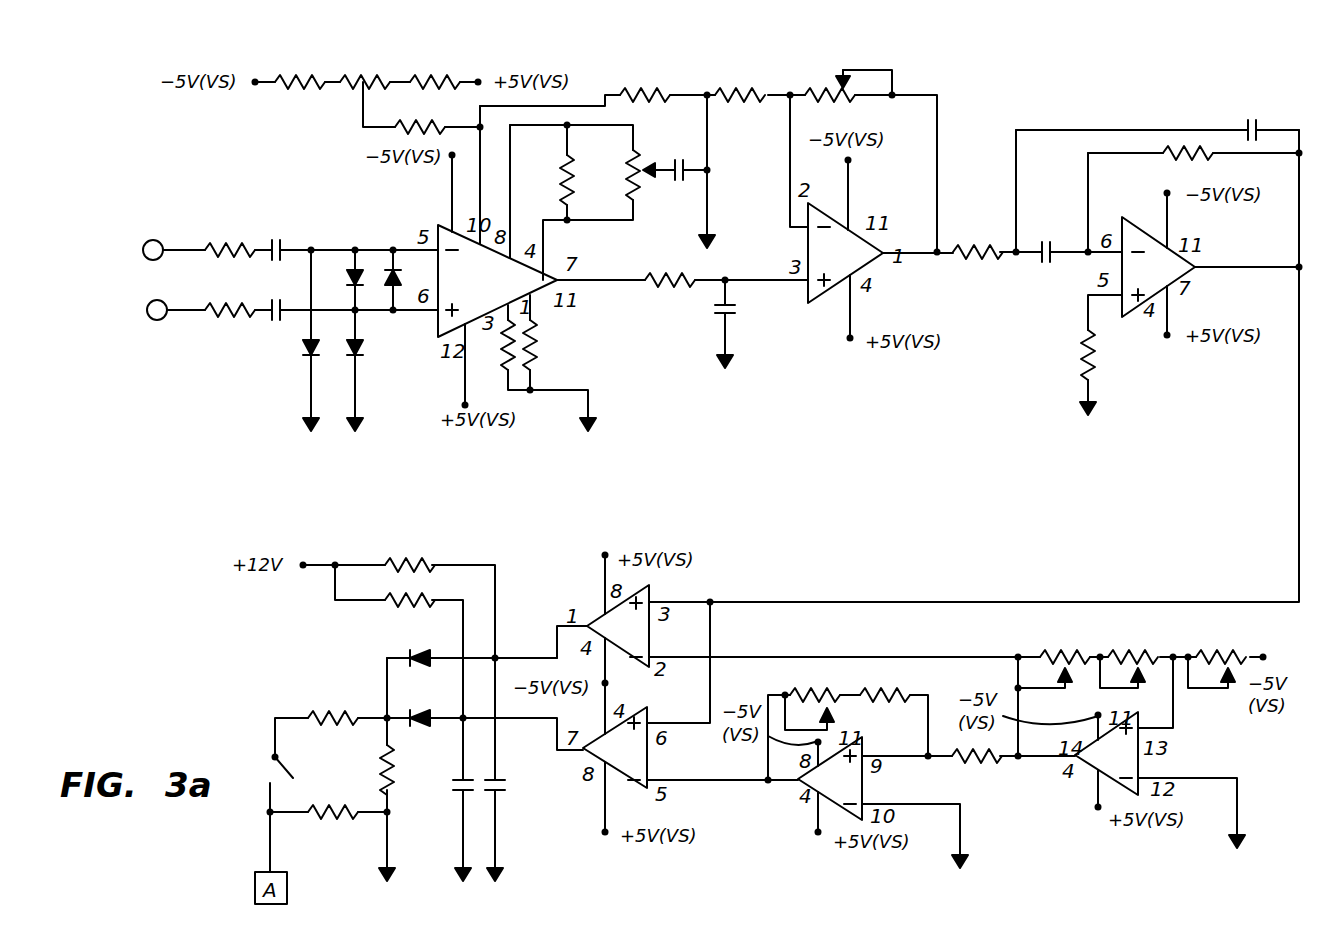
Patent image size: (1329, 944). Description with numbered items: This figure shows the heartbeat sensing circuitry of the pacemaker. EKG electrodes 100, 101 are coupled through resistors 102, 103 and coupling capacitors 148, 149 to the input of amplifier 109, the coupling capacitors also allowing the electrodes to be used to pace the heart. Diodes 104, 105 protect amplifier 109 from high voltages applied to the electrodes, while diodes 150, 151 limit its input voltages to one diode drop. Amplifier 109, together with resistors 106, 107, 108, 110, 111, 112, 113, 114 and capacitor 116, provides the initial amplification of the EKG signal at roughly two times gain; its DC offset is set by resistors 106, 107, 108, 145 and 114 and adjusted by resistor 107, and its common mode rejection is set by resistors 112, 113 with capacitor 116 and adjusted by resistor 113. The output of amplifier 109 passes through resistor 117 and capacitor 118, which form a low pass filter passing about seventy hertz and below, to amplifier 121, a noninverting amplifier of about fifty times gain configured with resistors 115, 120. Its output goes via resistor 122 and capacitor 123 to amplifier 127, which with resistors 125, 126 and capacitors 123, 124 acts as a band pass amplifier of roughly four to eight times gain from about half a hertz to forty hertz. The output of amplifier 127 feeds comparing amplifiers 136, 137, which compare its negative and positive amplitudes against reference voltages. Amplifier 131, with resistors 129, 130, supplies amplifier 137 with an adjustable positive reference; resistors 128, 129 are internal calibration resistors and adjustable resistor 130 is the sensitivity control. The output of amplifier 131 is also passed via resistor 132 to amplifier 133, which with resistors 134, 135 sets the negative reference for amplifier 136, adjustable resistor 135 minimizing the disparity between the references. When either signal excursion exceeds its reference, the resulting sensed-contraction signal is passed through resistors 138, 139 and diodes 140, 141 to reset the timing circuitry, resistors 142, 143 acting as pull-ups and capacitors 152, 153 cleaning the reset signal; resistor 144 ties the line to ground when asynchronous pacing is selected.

The EKG electrode 100 is at (157, 320).
The EKG electrode 101 is at (153, 240).
The resistor 102 is at (218, 242).
The resistor 103 is at (231, 322).
The diode 104 is at (353, 268).
The diode 105 is at (387, 268).
The resistor 106 is at (297, 65).
The resistor 107 is at (366, 65).
The resistor 108 is at (437, 63).
The amplifier 109 is at (437, 325).
The resistor 110 is at (542, 350).
The resistor 111 is at (536, 380).
The resistor 112 is at (572, 190).
The resistor 113 is at (645, 159).
The resistor 114 is at (645, 85).
The resistor 115 is at (755, 83).
The capacitor 116 is at (681, 174).
The resistor 117 is at (670, 289).
The capacitor 118 is at (738, 315).
The resistor 120 is at (865, 69).
The amplifier 121 is at (878, 263).
The resistor 122 is at (979, 246).
The capacitor 123 is at (1041, 268).
The capacitor 124 is at (1245, 123).
The resistor 125 is at (1225, 148).
The resistor 126 is at (1072, 363).
The amplifier 127 is at (1200, 259).
The resistor 128 is at (1232, 648).
The resistor 129 is at (1135, 648).
The resistor 130 is at (1060, 648).
The amplifier 131 is at (1140, 763).
The resistor 132 is at (990, 766).
The amplifier 133 is at (865, 792).
The resistor 134 is at (898, 688).
The adjustable resistor 135 is at (818, 690).
The amplifier 136 is at (648, 763).
The amplifier 137 is at (602, 612).
The resistor 138 is at (380, 775).
The resistor 139 is at (330, 708).
The diode 140 is at (425, 730).
The diode 141 is at (430, 654).
The resistor 142 is at (418, 558).
The resistor 143 is at (383, 605).
The resistor 144 is at (331, 823).
The resistor 145 is at (395, 138).
The coupling capacitor 148 is at (293, 230).
The coupling capacitor 149 is at (270, 322).
The diode 150 is at (372, 348).
The diode 151 is at (302, 350).
The capacitor 152 is at (458, 793).
The capacitor 153 is at (505, 790).